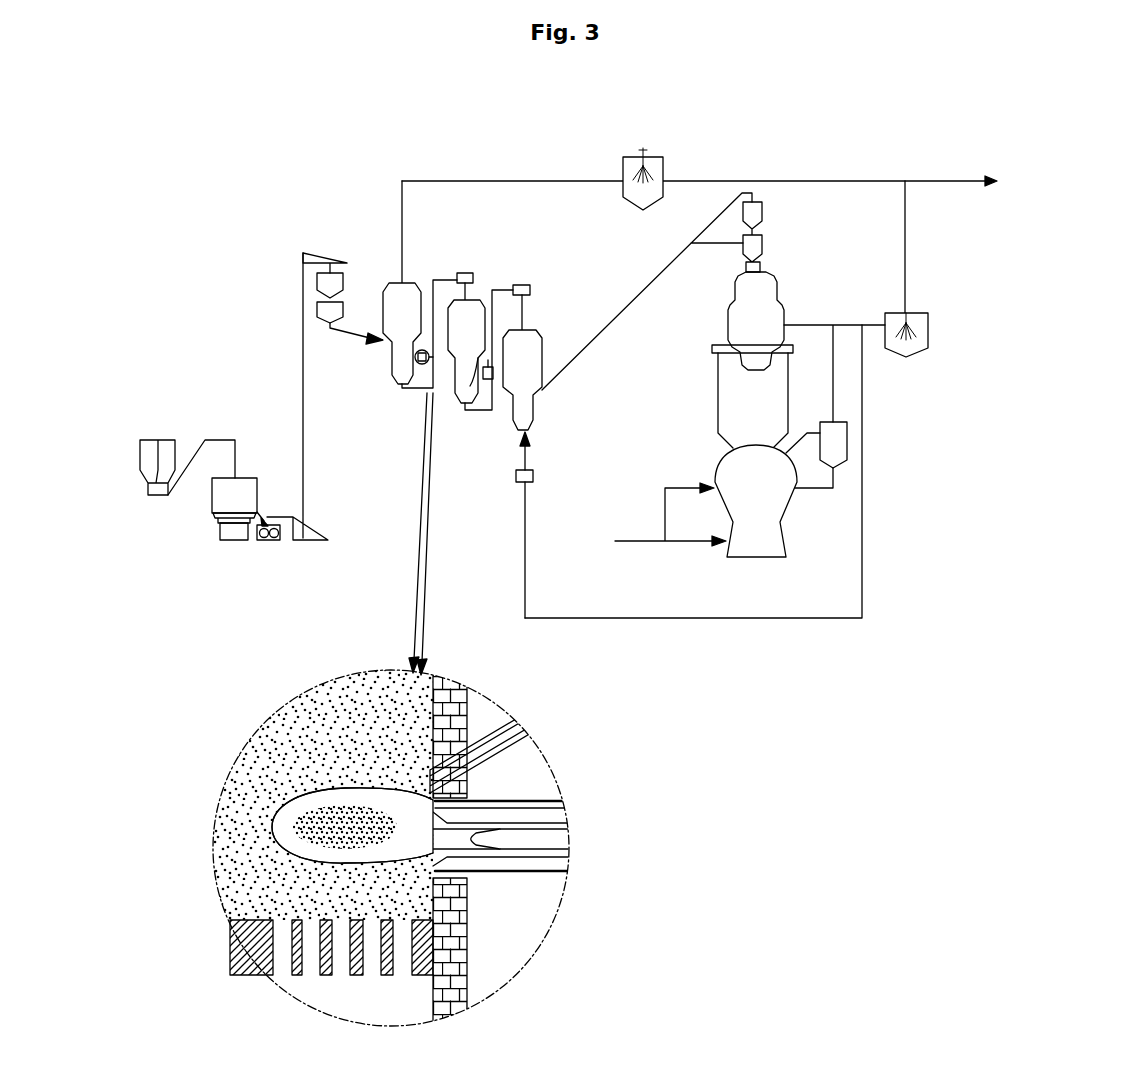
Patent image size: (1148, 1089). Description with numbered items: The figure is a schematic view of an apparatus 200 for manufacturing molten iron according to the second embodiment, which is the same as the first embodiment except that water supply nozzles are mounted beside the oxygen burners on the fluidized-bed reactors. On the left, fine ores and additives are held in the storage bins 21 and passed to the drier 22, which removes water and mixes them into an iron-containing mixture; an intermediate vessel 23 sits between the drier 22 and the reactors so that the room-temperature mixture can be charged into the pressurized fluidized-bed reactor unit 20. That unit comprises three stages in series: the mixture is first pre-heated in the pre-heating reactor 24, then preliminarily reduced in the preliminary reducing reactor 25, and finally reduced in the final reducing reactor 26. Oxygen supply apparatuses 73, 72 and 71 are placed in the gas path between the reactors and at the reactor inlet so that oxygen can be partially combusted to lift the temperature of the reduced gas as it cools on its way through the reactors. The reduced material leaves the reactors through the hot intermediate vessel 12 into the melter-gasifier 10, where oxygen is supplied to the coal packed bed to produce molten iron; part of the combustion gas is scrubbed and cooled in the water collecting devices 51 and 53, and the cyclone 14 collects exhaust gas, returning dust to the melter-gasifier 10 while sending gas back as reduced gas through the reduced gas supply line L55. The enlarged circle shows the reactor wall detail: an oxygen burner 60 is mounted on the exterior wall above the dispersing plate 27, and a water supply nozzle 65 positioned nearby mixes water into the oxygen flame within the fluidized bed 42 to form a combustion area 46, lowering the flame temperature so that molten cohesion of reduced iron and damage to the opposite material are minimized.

The apparatus for manufacturing molten iron 200 is at (695, 100).
The fluidized-bed reactor unit 20 is at (497, 233).
The raw coal hopper 21 is at (166, 440).
The drier 22 is at (250, 478).
The intermediate vessel 23 is at (317, 282).
The pre-heating reactor 24 is at (416, 283).
The preliminary reducing reactor 25 is at (480, 300).
The final reducing reactor 26 is at (538, 331).
The oxygen supply apparatus 73 is at (466, 273).
The oxygen supply apparatus 72 is at (524, 286).
The oxygen supply apparatus 71 is at (534, 477).
The water supply nozzle 65 is at (418, 351).
The oxygen burner 60 is at (418, 386).
The water collecting device 51 is at (664, 168).
The water collecting device 53 is at (920, 314).
The hot intermediate vessel 12 is at (761, 266).
The cyclone 14 is at (848, 436).
The melter-gasifier 10 is at (787, 558).
The reduced gas supply line L55 is at (733, 620).
The fluidized bed 42 is at (246, 768).
The combustion area 46 is at (272, 826).
The dispersing plate 27 is at (327, 977).